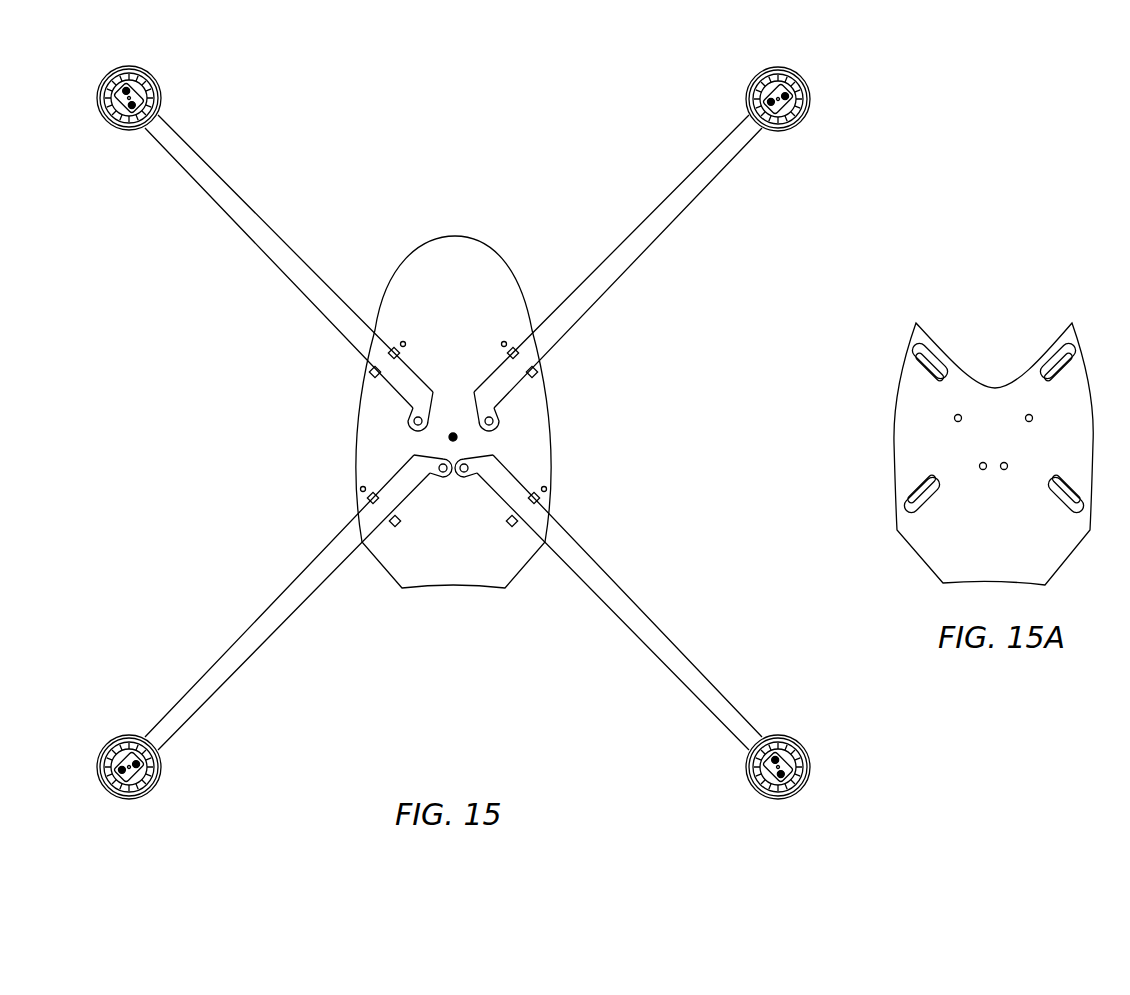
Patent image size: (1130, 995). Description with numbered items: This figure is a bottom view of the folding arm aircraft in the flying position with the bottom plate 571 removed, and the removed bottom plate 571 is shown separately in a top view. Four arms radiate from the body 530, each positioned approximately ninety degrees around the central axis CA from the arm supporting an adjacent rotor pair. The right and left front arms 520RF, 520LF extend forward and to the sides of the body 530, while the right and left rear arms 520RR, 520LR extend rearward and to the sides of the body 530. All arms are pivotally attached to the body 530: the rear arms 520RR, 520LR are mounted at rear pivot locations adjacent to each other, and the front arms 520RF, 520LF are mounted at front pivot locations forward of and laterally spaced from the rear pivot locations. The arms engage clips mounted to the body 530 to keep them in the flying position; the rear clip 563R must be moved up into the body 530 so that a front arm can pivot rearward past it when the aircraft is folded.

In FIG. 15, the right front arm 520RF is at (243, 197).
In FIG. 15, the left front arm 520LF is at (675, 224).
In FIG. 15, the right rear arm 520RR is at (241, 674).
In FIG. 15, the left rear arm 520LR is at (694, 656).
In FIG. 15, the body 530 is at (552, 432).
In FIG. 15, the rear clip 563R is at (547, 489).
In FIG. 15, the central axis CA is at (449, 437).
In FIG. 15A, the bottom plate 571 is at (894, 448).